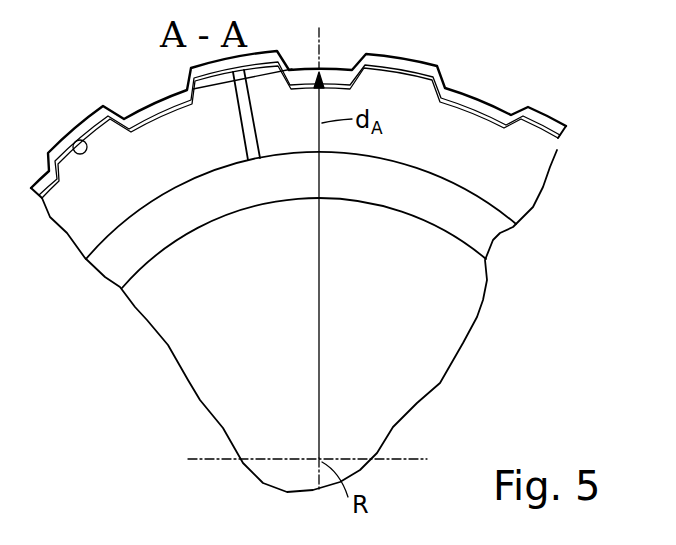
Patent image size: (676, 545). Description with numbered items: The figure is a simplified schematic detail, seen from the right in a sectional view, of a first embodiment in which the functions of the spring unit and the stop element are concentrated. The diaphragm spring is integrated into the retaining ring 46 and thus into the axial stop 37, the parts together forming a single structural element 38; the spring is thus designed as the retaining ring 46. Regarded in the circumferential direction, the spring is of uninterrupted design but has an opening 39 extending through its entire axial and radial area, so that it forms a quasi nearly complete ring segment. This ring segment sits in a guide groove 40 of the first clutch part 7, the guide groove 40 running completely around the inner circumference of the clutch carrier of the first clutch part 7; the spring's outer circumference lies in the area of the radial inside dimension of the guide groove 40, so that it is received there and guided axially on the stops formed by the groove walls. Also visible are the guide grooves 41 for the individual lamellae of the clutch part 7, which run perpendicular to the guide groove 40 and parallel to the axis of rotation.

The first clutch part 7 is at (553, 117).
The single structural element 38 is at (341, 175).
The axial stop 37 is at (299, 175).
The retaining ring 46 is at (527, 190).
The opening 39 is at (255, 160).
The guide groove 40 is at (547, 133).
The guide grooves for the lamellae 41 is at (74, 143).